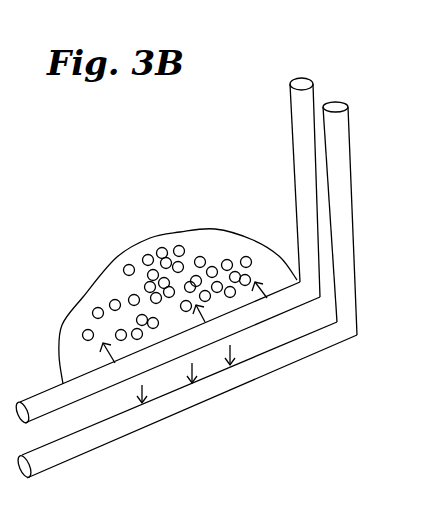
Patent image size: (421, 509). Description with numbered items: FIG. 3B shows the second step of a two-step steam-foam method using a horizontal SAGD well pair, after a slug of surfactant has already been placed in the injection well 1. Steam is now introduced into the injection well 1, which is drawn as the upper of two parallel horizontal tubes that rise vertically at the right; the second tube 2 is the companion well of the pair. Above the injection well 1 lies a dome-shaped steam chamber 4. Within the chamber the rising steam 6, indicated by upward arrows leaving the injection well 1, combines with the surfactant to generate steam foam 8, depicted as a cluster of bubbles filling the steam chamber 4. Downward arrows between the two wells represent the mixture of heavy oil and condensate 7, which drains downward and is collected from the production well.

The injection well 1 is at (290, 110).
The second tube 2 is at (350, 137).
The steam chamber 4 is at (62, 327).
The rising steam 6 is at (176, 325).
The mixture of heavy oil and condensate 7 is at (195, 372).
The steam foam 8 is at (167, 292).